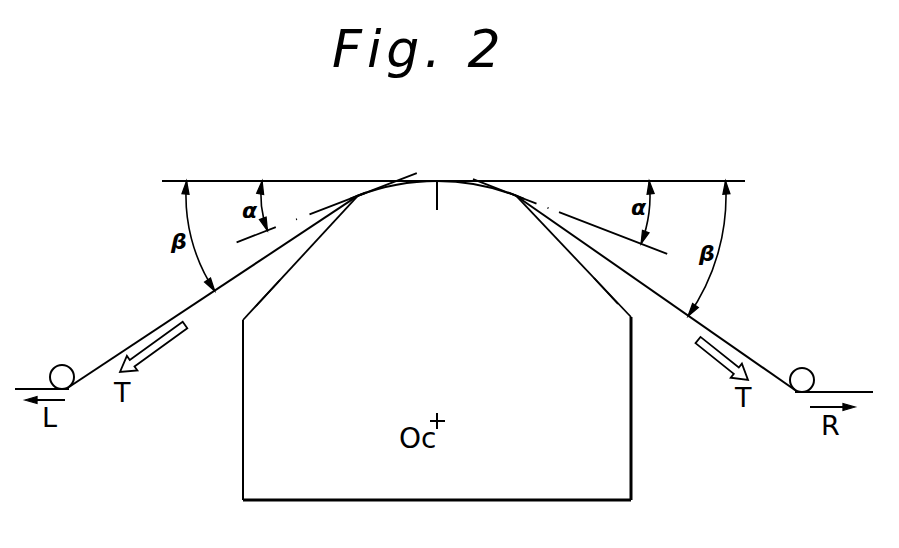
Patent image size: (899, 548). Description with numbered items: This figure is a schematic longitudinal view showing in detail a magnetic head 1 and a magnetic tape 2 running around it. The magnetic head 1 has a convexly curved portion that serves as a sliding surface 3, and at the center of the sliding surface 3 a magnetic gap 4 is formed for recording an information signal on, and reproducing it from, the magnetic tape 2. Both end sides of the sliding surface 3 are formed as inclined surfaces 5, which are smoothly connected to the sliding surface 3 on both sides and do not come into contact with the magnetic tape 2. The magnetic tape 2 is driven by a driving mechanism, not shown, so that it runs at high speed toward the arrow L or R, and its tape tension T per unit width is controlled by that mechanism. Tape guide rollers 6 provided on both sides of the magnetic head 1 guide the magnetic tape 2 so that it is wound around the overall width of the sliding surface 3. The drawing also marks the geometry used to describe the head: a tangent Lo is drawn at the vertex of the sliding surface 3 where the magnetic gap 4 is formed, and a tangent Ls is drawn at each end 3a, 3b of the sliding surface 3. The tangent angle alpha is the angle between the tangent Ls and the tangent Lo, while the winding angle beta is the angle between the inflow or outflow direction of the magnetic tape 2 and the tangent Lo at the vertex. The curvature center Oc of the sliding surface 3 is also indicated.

The magnetic head 1 is at (250, 374).
The magnetic tape 2 is at (135, 344).
The sliding surface 3 is at (449, 180).
The end of the sliding surface 3a is at (359, 199).
The end of the sliding surface 3b is at (517, 199).
The magnetic gap 4 is at (440, 192).
The inclined surfaces 5 is at (271, 289).
The tape guide rollers 6 is at (66, 374).
The tangent at the center of the sliding surface Lo is at (328, 180).
The tangent at the end of the sliding surface Ls is at (240, 240).